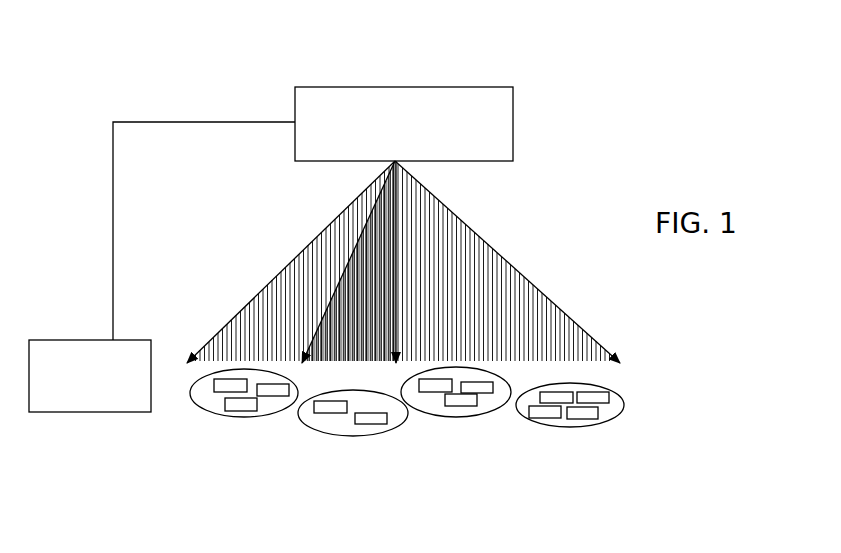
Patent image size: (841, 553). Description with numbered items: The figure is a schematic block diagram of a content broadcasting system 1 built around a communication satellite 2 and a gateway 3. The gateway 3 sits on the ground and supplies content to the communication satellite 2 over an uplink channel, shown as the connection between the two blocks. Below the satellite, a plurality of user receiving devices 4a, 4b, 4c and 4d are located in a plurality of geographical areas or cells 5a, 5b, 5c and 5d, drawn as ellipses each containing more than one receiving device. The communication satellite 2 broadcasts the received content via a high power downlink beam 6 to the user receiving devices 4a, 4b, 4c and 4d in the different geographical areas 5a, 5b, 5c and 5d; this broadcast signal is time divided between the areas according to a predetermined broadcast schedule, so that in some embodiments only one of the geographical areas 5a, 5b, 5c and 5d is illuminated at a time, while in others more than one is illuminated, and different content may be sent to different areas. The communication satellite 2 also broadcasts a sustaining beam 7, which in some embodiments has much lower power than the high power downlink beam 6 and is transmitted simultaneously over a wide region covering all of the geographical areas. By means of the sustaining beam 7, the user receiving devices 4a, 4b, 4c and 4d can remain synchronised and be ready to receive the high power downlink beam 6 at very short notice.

The content broadcasting system 1 is at (153, 66).
The communication satellite 2 is at (404, 124).
The gateway 3 is at (162, 267).
The user receiving device 4a is at (251, 410).
The user receiving device 4b is at (380, 423).
The user receiving device 4c is at (487, 392).
The user receiving device 4d is at (589, 418).
The geographical area 5a is at (218, 416).
The geographical area 5b is at (330, 437).
The geographical area 5c is at (455, 418).
The geographical area 5d is at (570, 428).
The high power downlink beam 6 is at (375, 265).
The sustaining beam 7 is at (463, 268).